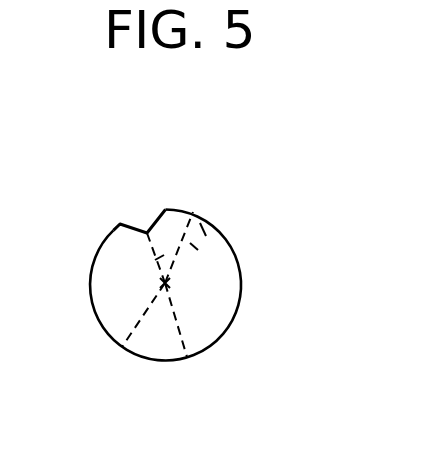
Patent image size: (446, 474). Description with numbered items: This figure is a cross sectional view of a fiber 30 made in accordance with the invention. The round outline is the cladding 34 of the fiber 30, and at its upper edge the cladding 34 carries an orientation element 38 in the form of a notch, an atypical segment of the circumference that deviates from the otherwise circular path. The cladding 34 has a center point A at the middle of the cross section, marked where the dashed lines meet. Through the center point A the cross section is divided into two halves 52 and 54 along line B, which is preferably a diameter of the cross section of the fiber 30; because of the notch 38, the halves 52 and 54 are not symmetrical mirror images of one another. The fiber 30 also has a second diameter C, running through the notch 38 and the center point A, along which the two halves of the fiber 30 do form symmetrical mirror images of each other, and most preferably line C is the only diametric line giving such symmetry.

The fiber 30 is at (87, 196).
The interior cladding 34 is at (223, 282).
The orientation element 38 is at (147, 232).
The first half 52 is at (120, 303).
The second half 54 is at (226, 333).
The center point A is at (164, 282).
The diametric line B is at (203, 252).
The second diameter C is at (193, 212).